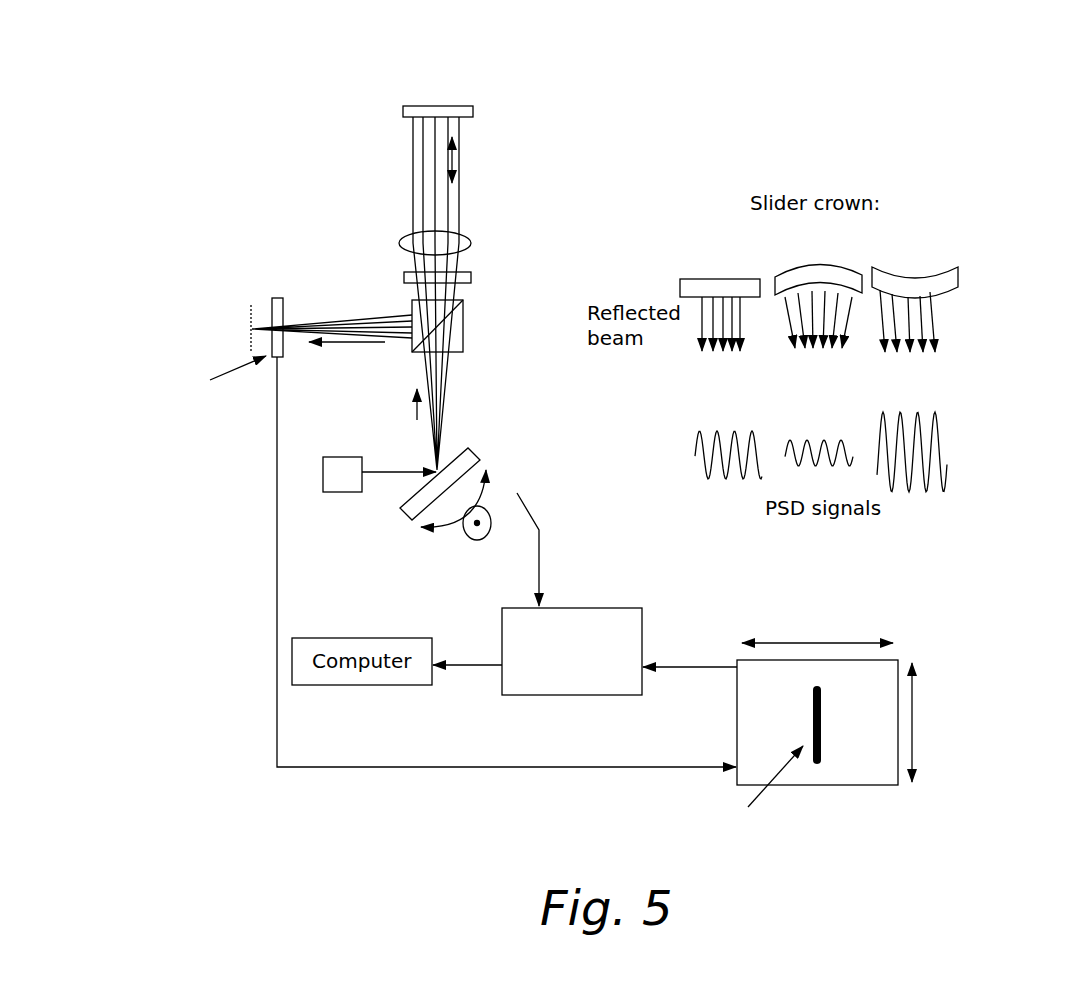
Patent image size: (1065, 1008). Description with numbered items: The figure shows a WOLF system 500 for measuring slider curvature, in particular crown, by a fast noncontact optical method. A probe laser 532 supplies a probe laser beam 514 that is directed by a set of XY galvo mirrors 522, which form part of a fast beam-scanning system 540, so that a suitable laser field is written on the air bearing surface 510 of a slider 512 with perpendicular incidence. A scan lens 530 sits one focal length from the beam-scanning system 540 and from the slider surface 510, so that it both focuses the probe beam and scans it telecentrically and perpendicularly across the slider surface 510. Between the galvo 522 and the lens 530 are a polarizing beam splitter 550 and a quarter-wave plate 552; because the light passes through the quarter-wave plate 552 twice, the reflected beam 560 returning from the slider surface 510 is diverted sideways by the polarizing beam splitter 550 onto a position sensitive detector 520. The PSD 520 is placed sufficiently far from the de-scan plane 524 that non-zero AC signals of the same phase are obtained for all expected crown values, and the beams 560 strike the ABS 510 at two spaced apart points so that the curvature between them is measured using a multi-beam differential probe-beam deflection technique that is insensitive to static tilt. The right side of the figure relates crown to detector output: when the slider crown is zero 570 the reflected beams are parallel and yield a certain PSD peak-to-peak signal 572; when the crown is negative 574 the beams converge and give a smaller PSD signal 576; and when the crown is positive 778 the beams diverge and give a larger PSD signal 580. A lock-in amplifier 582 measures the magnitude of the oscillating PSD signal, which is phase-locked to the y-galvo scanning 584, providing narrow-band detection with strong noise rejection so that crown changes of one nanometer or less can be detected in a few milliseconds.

The WOLF system 500 is at (856, 126).
The air bearing surface (ABS) 510 is at (468, 130).
The slider 512 is at (475, 74).
The probe laser beam 514 is at (478, 187).
The position sensitive detector (PSD) 520 is at (142, 435).
The XY galvo mirrors 522 is at (403, 543).
The de-scan plane 524 is at (248, 320).
The scan lens 530 is at (472, 242).
The probe laser 532 is at (323, 480).
The beam-scanning system 540 is at (552, 483).
The polarizing beam splitter 550 is at (465, 320).
The quarter-wave plate 552 is at (472, 277).
The reflected beam 560 is at (372, 312).
The zero slider crown 570 is at (705, 248).
The PSD peak-to-peak signal 572 is at (728, 487).
The negative slider crown 574 is at (838, 250).
The smaller PSD signal 576 is at (815, 437).
The positive crown slider 778 is at (938, 244).
The larger PSD signal 580 is at (918, 497).
The lock-in amplifier 582 is at (632, 607).
The y-galvo scanning 584 is at (985, 688).